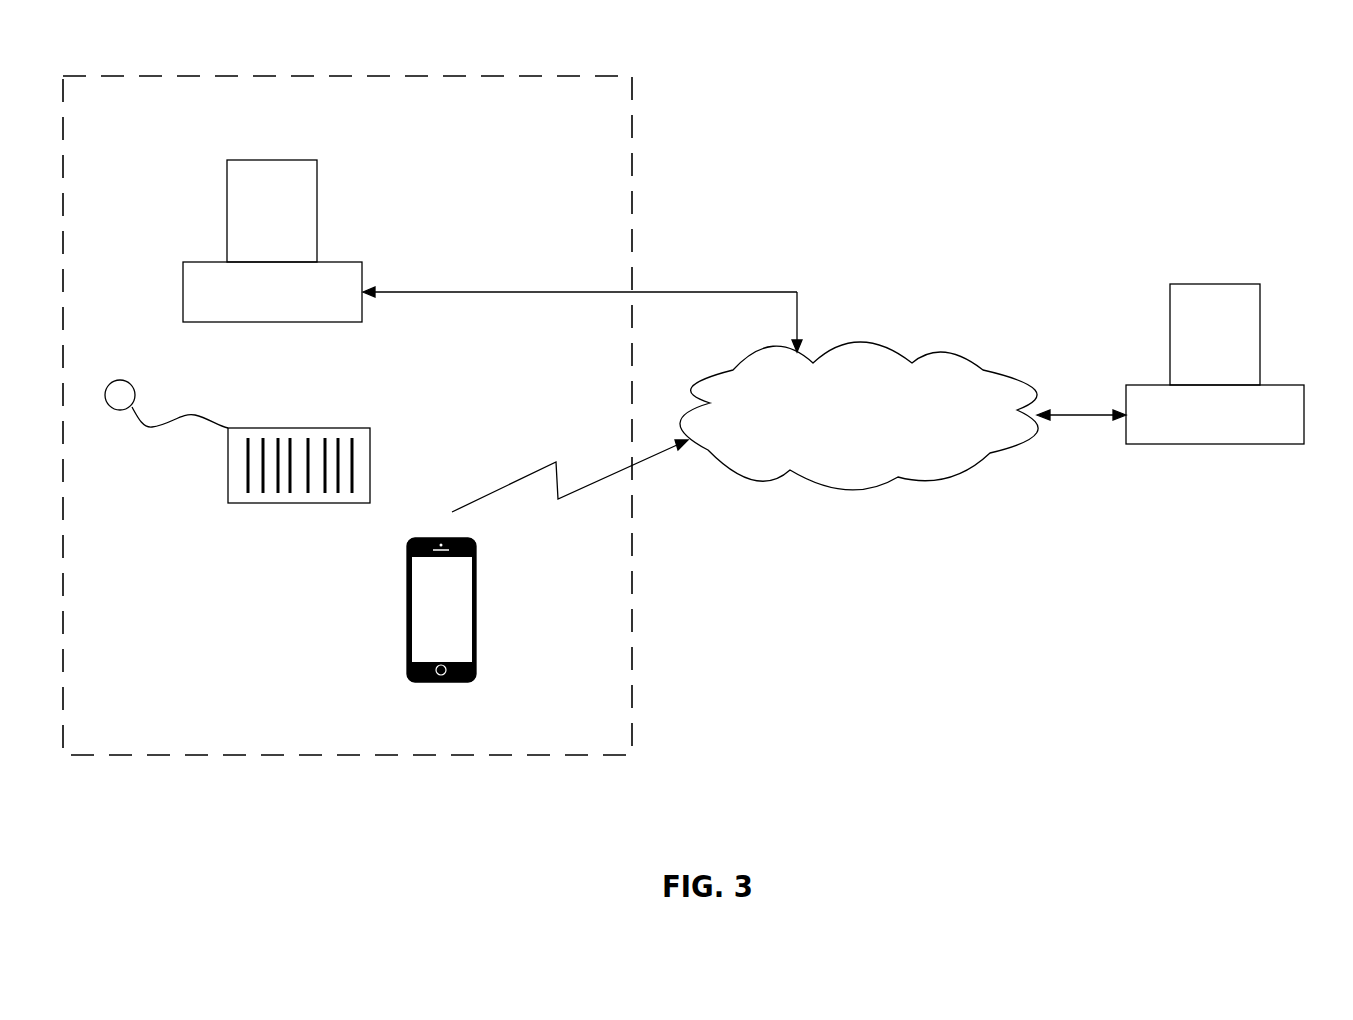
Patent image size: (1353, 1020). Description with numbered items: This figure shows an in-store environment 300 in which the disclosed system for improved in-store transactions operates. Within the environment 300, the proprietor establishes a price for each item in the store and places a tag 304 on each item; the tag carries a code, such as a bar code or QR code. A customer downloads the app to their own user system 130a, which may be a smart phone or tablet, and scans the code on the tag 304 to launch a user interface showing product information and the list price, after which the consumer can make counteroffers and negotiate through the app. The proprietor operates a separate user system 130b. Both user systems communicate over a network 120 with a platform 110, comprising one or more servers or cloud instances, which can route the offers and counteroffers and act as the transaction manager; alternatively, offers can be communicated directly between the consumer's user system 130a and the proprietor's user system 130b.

The in-store environment 300 is at (152, 87).
The user system of the proprietor 130b is at (310, 223).
The tag 304 is at (367, 448).
The user system of the consumer 130a is at (467, 592).
The network 120 is at (885, 350).
The platform 110 is at (1253, 342).